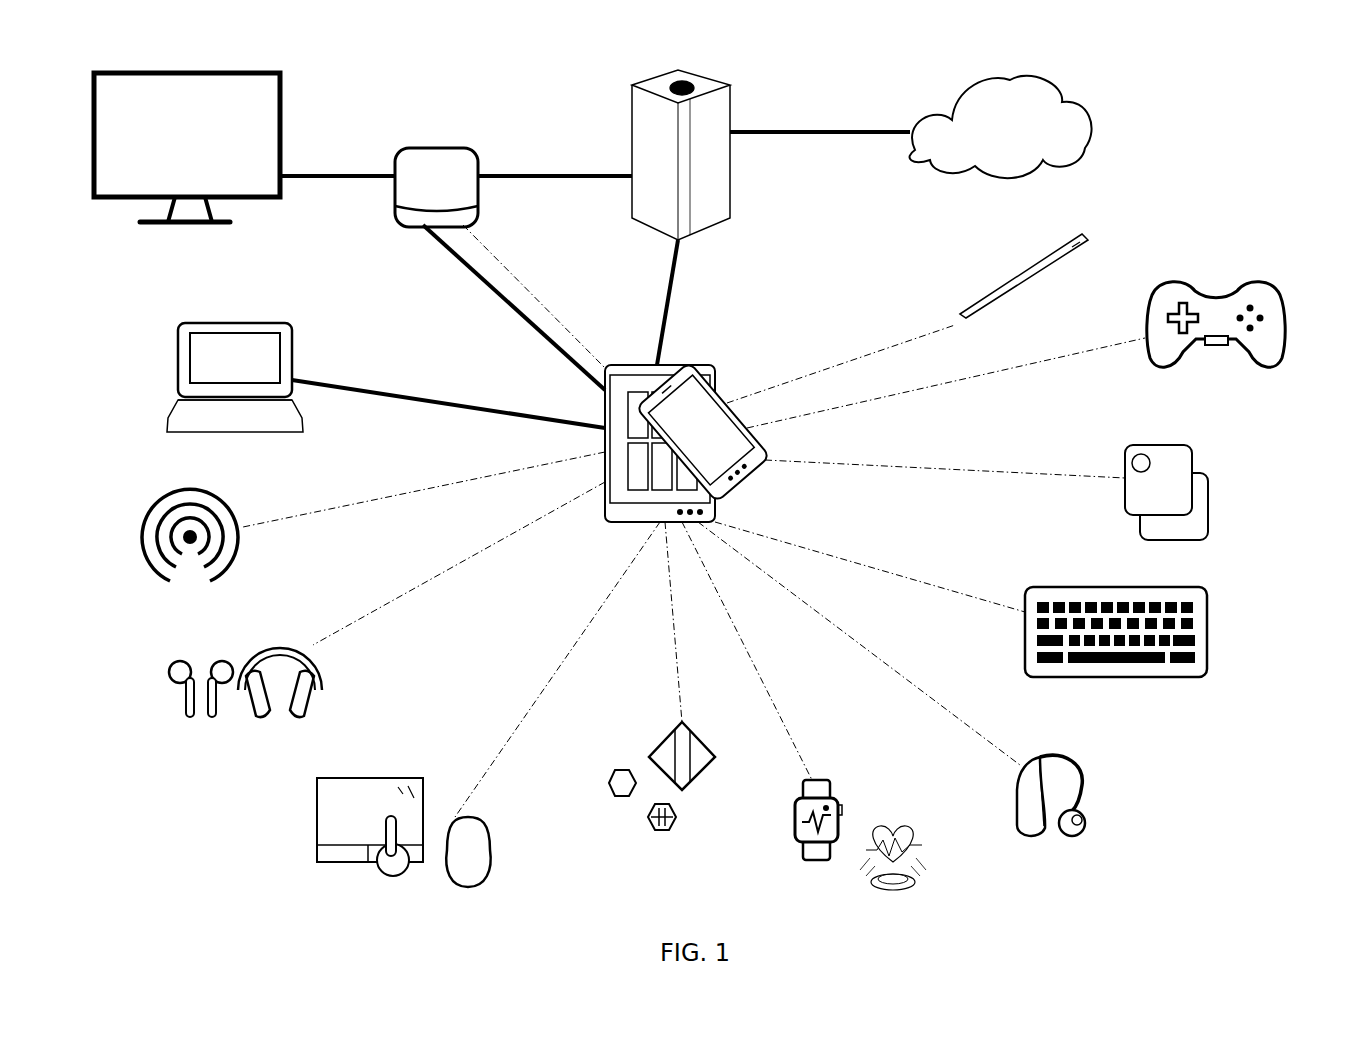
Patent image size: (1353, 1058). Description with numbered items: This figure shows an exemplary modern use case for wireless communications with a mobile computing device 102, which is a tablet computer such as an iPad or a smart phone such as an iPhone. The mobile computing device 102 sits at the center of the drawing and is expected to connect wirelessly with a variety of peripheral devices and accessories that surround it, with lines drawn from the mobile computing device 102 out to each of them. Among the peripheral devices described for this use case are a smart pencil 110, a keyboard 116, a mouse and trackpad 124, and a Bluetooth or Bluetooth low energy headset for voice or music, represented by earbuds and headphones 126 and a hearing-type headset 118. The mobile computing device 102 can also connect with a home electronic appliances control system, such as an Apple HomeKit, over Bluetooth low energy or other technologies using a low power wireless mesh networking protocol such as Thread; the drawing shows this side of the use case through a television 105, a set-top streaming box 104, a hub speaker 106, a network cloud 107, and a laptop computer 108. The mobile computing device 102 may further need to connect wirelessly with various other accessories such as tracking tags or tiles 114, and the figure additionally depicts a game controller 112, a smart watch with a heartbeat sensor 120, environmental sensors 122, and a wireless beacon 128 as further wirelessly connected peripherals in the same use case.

The mobile computing device 102 is at (687, 420).
The set-top box / TV streaming device 104 is at (440, 148).
The television / display 105 is at (283, 96).
The smart speaker / hub 106 is at (730, 100).
The network cloud 107 is at (1040, 85).
The laptop computer 108 is at (178, 370).
The stylus 110 is at (1015, 276).
The game controller 112 is at (1243, 282).
The wireless tags / cards 114 is at (1208, 505).
The keyboard 116 is at (1210, 620).
The hearing aid 118 is at (1088, 778).
The smart watch with heartbeat sensor 120 is at (910, 808).
The environmental sensors 122 is at (727, 824).
The trackpad and mouse 124 is at (389, 906).
The earbuds and headphones 126 is at (254, 758).
The wireless beacon / speaker 128 is at (143, 530).